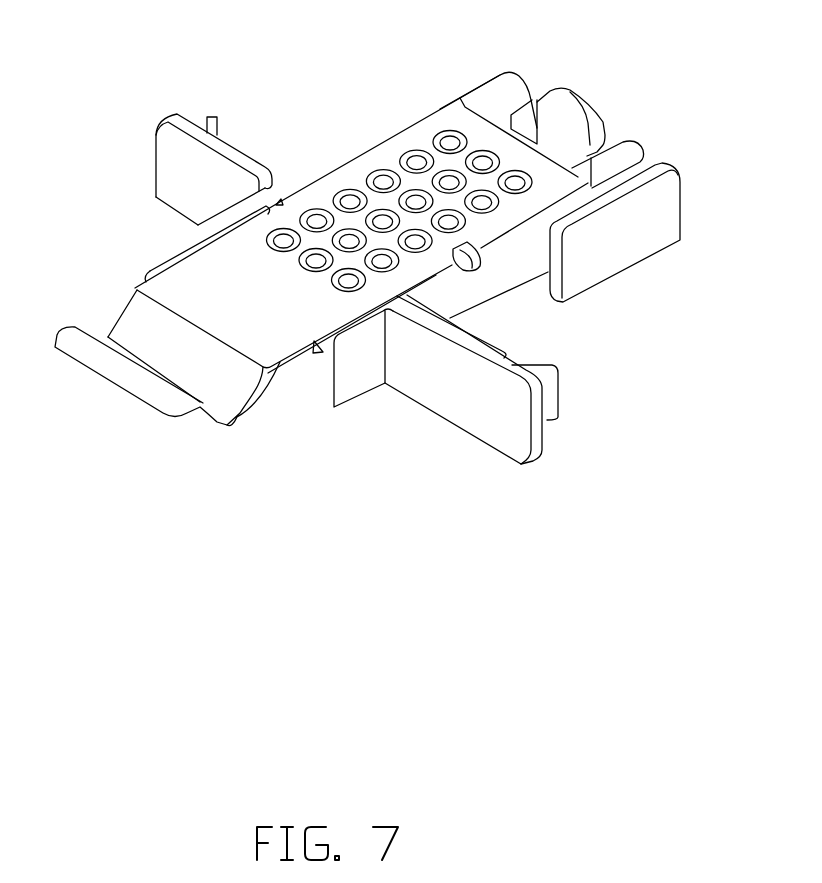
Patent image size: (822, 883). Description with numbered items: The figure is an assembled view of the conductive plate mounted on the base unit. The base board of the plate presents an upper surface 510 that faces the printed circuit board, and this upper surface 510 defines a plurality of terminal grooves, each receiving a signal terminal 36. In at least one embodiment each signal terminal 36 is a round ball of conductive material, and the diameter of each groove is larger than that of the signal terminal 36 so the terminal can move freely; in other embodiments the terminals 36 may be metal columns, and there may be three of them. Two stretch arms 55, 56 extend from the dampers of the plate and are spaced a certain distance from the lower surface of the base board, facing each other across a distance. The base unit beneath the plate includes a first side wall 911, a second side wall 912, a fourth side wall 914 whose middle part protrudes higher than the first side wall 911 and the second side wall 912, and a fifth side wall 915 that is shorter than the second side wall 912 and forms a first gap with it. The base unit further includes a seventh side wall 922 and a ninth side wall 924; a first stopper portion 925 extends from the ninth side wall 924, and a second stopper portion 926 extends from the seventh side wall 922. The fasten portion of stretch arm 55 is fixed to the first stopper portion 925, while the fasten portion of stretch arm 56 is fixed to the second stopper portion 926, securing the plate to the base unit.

The signal terminal 36 is at (414, 196).
The stretch arm 55 is at (206, 117).
The stretch arm 56 is at (548, 374).
The upper surface 510 is at (198, 285).
The first side wall 911 is at (490, 87).
The second side wall 912 is at (632, 148).
The fourth side wall 914 is at (575, 120).
The fifth side wall 915 is at (667, 218).
The seventh side wall 922 is at (362, 370).
The ninth side wall 924 is at (197, 233).
The first stopper portion 925 is at (178, 155).
The second stopper portion 926 is at (465, 410).